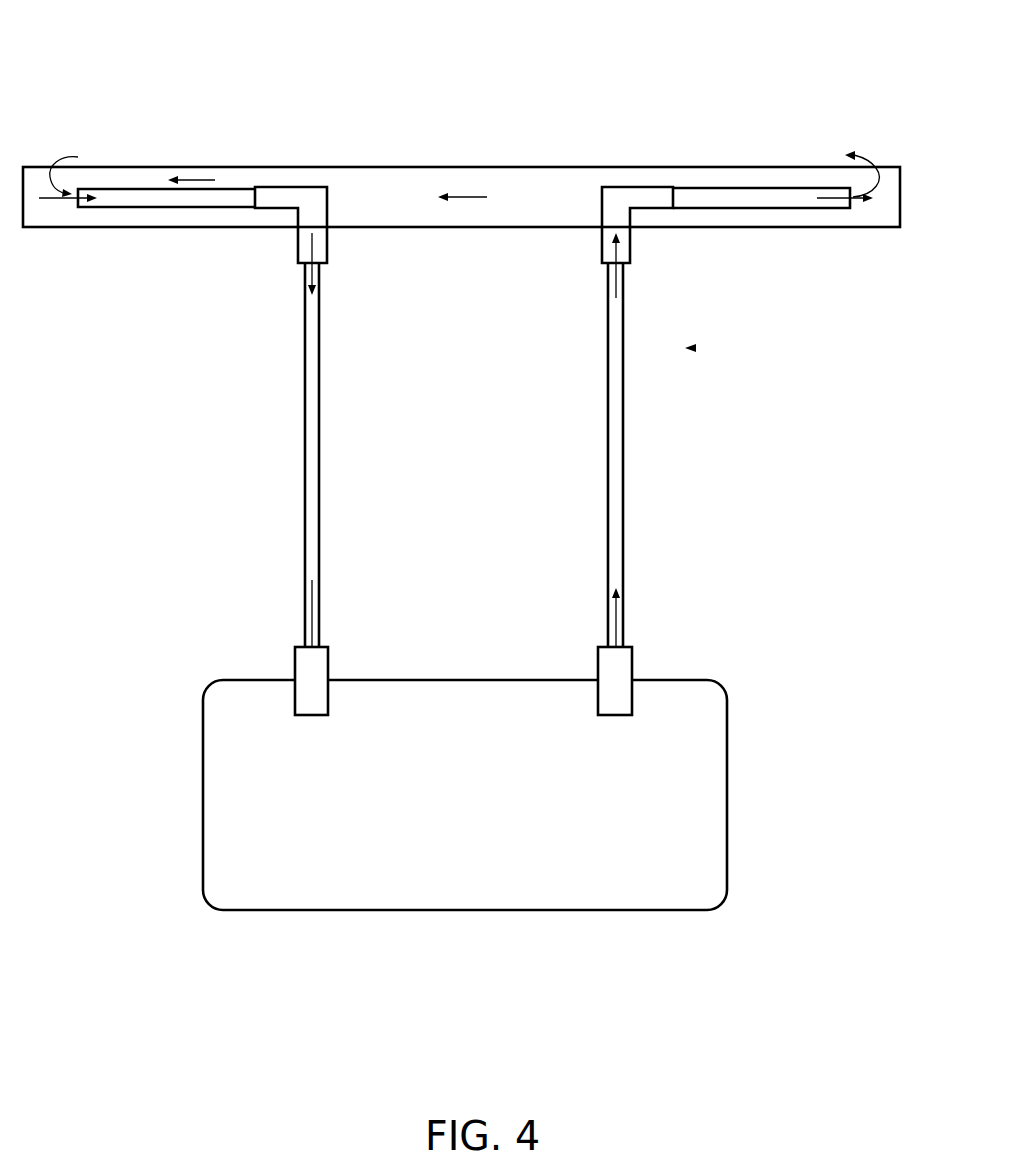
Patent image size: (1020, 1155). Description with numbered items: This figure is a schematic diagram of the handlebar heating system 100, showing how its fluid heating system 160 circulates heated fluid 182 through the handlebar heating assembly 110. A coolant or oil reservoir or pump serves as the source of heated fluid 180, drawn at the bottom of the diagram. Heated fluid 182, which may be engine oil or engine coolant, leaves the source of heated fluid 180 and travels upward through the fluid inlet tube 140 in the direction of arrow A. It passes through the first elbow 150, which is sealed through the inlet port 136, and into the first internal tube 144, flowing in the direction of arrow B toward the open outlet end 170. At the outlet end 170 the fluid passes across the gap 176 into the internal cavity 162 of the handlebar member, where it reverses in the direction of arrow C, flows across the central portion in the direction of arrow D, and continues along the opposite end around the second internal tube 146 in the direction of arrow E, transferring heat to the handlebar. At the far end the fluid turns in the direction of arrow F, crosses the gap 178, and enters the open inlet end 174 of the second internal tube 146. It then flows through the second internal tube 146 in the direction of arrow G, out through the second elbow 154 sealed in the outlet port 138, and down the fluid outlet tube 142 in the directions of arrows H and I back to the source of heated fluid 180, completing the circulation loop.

The handlebar heating system 100 is at (206, 46).
The handlebar heating assembly 110 is at (141, 158).
The inlet port 136 is at (632, 214).
The outlet port 138 is at (330, 233).
The fluid inlet tube 140 is at (623, 455).
The fluid outlet tube 142 is at (305, 455).
The first internal tube 144 is at (733, 190).
The second internal tube 146 is at (175, 198).
The first elbow 150 is at (632, 240).
The second elbow 154 is at (330, 245).
The fluid heating system 160 is at (693, 348).
The internal cavity 162 is at (512, 178).
The outlet end 170 is at (855, 207).
The inlet end 174 is at (78, 205).
The gap 176 is at (885, 197).
The gap 178 is at (38, 193).
The source of heated fluid 180 is at (728, 790).
The heated fluid 182 is at (610, 540).